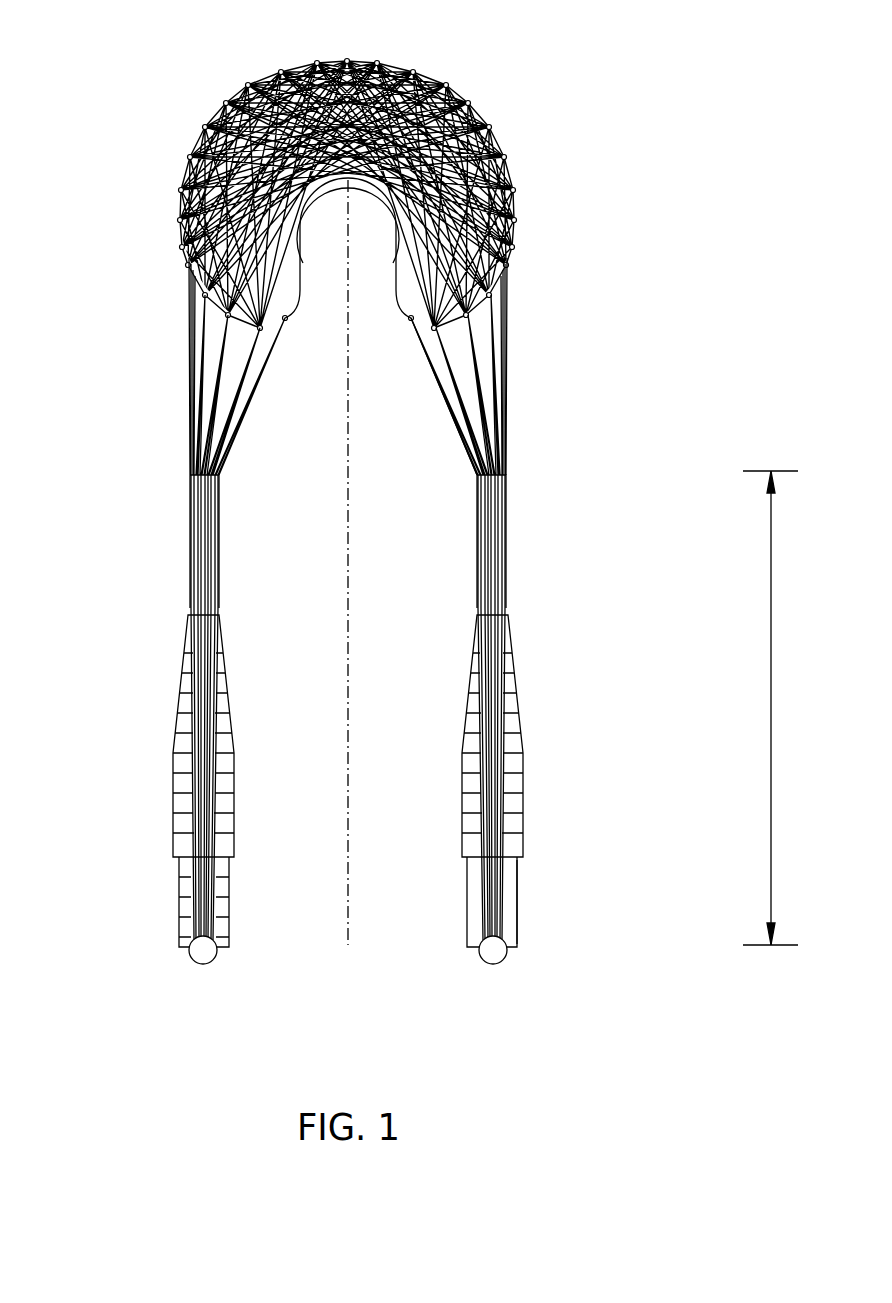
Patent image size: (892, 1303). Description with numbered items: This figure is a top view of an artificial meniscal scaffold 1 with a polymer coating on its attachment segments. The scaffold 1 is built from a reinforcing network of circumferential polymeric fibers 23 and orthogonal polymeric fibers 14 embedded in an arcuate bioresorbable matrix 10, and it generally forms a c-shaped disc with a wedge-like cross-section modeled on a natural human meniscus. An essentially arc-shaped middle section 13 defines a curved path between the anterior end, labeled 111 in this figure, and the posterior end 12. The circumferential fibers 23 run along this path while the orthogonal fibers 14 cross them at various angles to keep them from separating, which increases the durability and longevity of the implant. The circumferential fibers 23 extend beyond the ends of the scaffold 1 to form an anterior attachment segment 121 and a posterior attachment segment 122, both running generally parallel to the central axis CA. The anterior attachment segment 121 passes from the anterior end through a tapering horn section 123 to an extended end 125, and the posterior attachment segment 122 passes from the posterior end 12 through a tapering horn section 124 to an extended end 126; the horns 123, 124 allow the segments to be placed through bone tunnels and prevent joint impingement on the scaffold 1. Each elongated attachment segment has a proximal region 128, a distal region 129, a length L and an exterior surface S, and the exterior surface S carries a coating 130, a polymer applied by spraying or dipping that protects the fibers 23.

The artificial meniscal scaffold 1 is at (118, 634).
The arcuate bioresorbable matrix 10 is at (317, 193).
The posterior end 12 is at (413, 340).
The middle section 13 is at (453, 57).
The orthogonal polymeric fibers 14 is at (478, 115).
The circumferential polymeric fibers 23 is at (160, 211).
The first transition portion 111 is at (276, 323).
The anterior attachment segment 121 is at (136, 787).
The posterior attachment segment 122 is at (572, 764).
The tapering horn section 123 is at (170, 431).
The tapering horn section 124 is at (473, 435).
The extended end 125 is at (158, 962).
The extended end 126 is at (538, 944).
The proximal region 128 is at (462, 478).
The distal region 129 is at (453, 853).
The coating 130 is at (235, 761).
The exterior surface S is at (538, 868).
The length L is at (771, 713).
The central axis CA is at (348, 590).